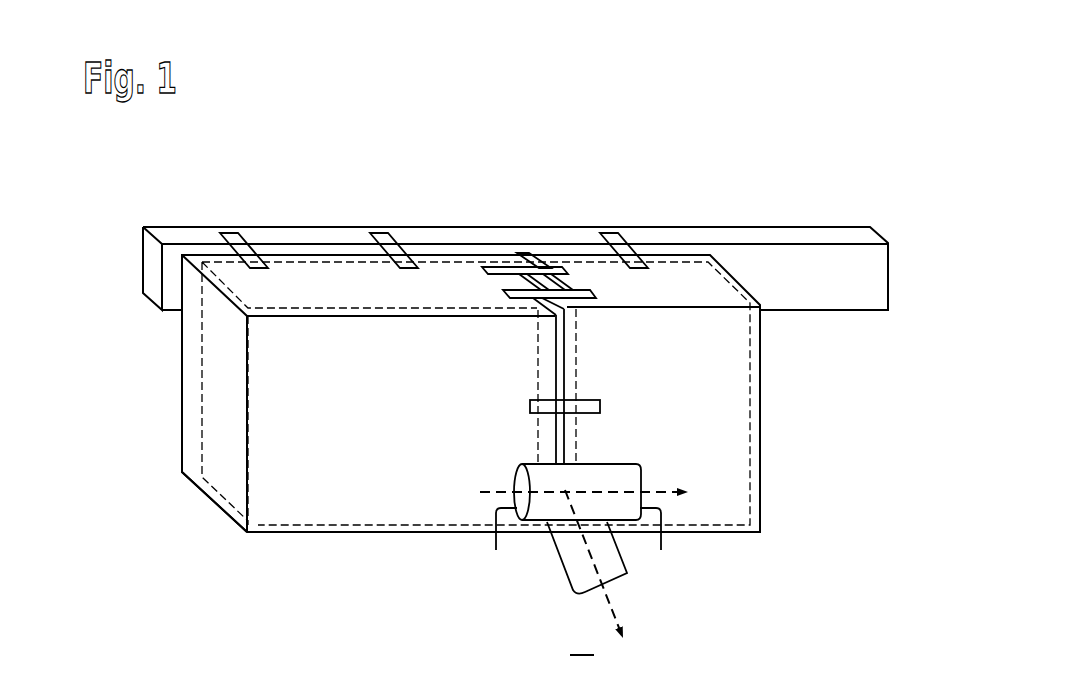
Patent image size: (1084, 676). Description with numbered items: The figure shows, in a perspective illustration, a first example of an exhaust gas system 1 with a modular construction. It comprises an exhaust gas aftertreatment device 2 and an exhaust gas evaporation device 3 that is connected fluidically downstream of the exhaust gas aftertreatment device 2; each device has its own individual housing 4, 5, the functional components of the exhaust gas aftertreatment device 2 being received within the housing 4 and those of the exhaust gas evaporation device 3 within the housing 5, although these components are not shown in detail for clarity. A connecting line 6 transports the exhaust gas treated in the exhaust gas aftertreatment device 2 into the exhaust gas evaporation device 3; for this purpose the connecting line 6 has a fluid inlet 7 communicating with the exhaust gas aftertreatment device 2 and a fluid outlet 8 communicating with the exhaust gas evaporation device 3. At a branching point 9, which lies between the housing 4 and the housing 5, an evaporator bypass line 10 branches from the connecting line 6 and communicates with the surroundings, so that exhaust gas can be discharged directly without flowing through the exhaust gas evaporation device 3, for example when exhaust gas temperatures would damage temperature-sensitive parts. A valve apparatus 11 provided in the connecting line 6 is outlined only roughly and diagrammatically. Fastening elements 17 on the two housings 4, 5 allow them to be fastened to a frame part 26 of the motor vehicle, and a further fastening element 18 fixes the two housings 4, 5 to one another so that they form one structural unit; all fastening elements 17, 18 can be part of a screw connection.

The exhaust gas system 1 is at (860, 180).
The exhaust gas aftertreatment device 2 is at (218, 386).
The exhaust gas evaporation device 3 is at (725, 503).
The housing 4 is at (346, 535).
The housing 5 is at (762, 445).
The connecting line 6 is at (627, 453).
The fluid inlet 7 is at (496, 550).
The fluid outlet 8 is at (661, 550).
The branching point 9 is at (574, 481).
The evaporator bypass line 10 is at (604, 552).
The valve apparatus 11 is at (573, 538).
The fastening element 17 is at (228, 232).
The further fastening element 18 is at (575, 283).
The frame part 26 is at (786, 236).